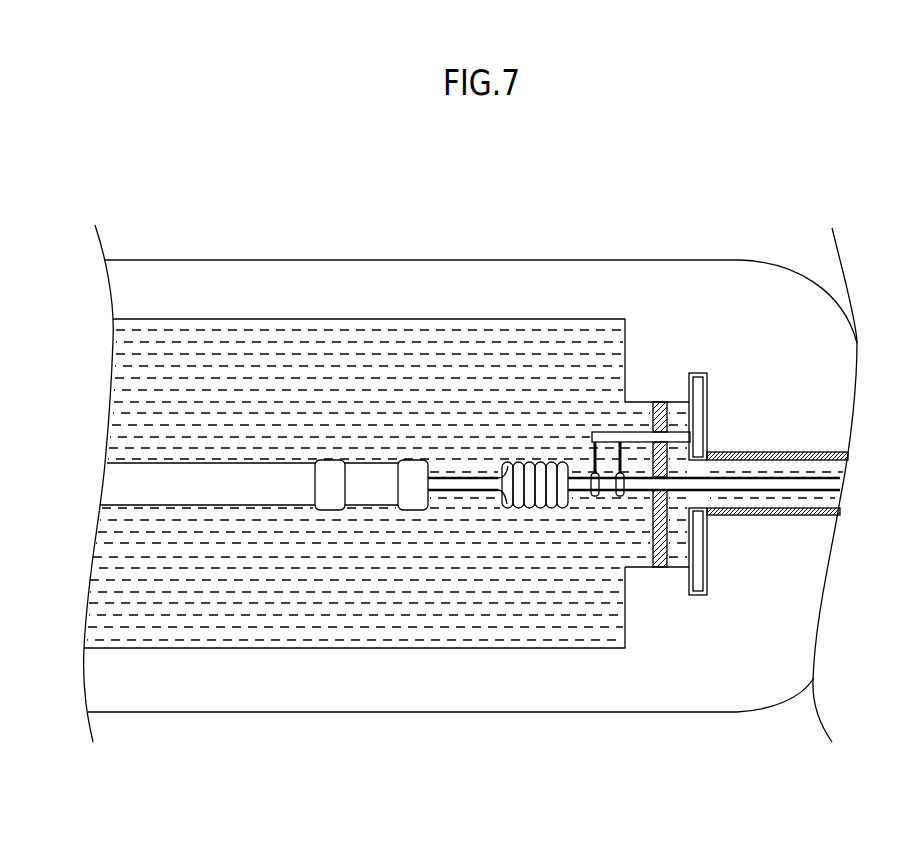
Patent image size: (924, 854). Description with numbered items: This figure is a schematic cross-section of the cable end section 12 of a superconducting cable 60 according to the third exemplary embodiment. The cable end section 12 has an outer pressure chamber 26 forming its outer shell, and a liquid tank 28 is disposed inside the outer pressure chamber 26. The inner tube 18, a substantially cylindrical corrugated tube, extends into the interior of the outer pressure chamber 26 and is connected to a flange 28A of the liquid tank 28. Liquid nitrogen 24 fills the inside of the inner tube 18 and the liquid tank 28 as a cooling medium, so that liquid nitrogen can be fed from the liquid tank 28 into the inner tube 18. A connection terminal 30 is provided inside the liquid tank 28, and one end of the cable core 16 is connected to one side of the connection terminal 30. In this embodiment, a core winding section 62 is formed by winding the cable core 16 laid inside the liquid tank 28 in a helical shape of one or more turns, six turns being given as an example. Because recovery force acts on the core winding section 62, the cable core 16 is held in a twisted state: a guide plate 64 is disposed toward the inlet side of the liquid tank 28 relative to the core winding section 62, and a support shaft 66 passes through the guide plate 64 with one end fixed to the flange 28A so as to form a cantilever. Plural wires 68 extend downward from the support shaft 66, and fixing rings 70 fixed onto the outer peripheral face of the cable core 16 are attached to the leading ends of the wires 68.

The cable end section 12 is at (310, 220).
The cable core 16 is at (818, 486).
The inner tube 18 is at (768, 516).
The liquid nitrogen 24 is at (528, 650).
The outer pressure chamber 26 is at (665, 249).
The liquid tank 28 is at (532, 310).
The flange of liquid tank 28A is at (708, 392).
The connection terminal 30 is at (370, 462).
The superconducting cable 60 is at (842, 408).
The core winding section 62 is at (541, 443).
The guide plate 64 is at (686, 570).
The support shaft 66 is at (690, 424).
The wires 68 is at (619, 445).
The fixing rings 70 is at (619, 497).